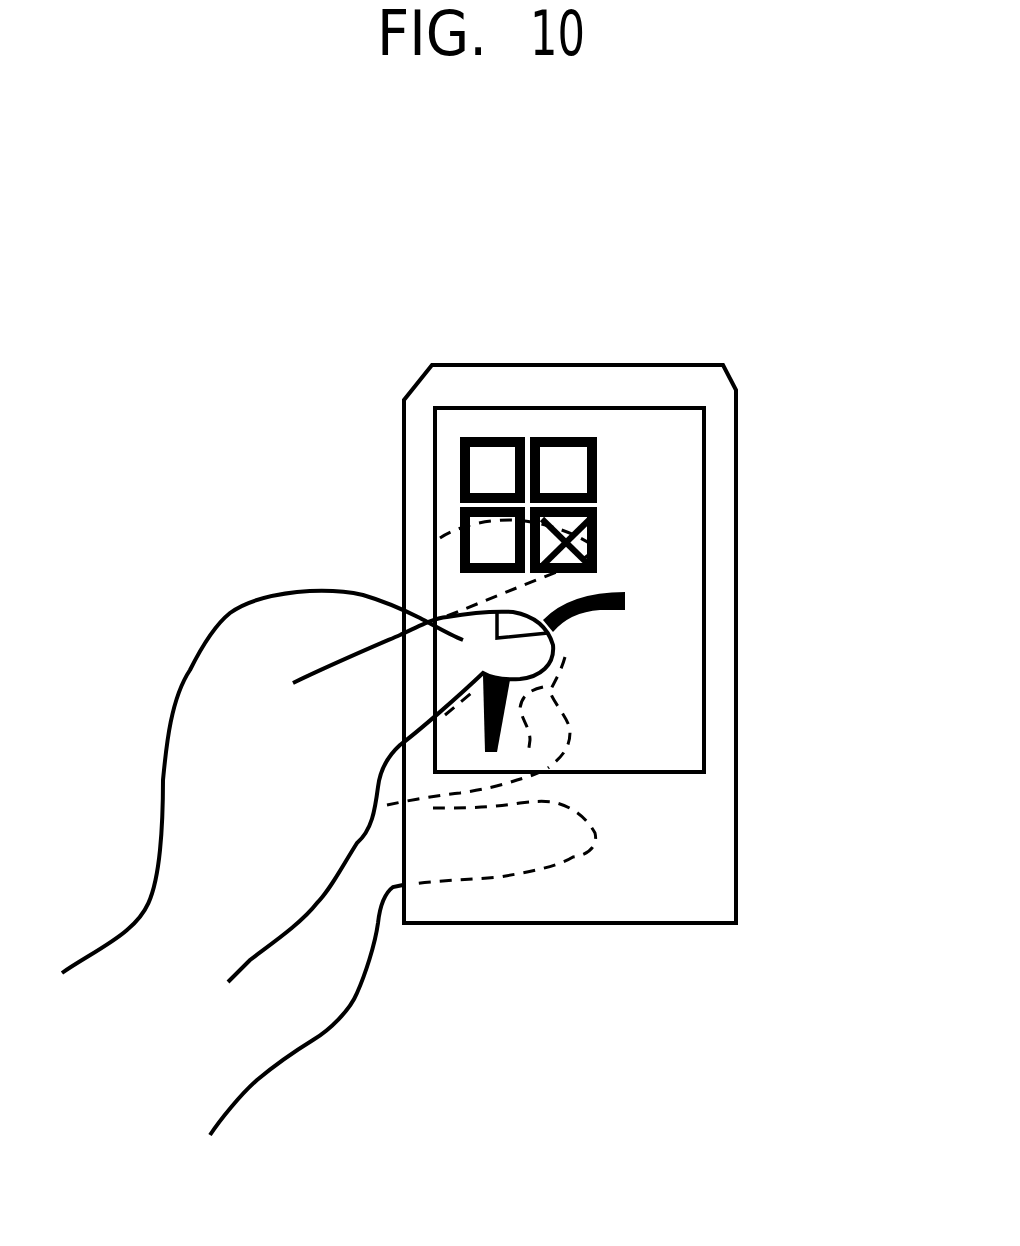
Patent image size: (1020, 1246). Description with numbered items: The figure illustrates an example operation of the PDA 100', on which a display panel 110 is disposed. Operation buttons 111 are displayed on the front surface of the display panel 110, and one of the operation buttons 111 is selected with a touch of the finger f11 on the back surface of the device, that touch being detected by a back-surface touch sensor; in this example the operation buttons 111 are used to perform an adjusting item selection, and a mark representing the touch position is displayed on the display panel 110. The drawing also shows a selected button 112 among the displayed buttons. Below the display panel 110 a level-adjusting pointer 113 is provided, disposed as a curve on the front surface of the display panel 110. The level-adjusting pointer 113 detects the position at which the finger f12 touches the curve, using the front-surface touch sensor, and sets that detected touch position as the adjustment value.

The PDA 100' is at (647, 644).
The display panel 110 is at (628, 437).
The operation buttons 111 is at (562, 462).
The selected icon 112 is at (597, 540).
The level-adjusting pointer 113 is at (598, 613).
The finger f11 is at (426, 535).
The finger f12 is at (445, 540).